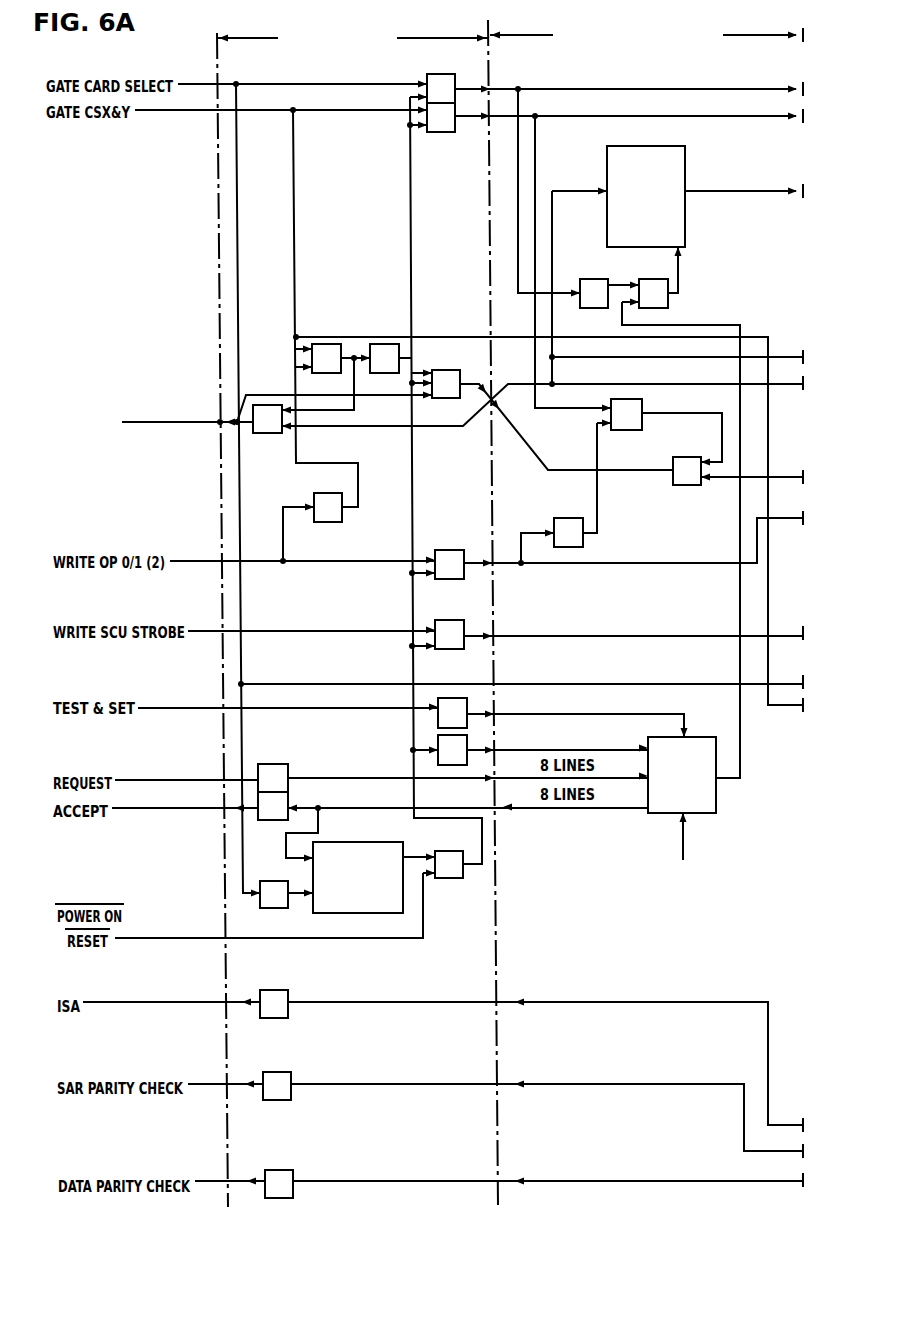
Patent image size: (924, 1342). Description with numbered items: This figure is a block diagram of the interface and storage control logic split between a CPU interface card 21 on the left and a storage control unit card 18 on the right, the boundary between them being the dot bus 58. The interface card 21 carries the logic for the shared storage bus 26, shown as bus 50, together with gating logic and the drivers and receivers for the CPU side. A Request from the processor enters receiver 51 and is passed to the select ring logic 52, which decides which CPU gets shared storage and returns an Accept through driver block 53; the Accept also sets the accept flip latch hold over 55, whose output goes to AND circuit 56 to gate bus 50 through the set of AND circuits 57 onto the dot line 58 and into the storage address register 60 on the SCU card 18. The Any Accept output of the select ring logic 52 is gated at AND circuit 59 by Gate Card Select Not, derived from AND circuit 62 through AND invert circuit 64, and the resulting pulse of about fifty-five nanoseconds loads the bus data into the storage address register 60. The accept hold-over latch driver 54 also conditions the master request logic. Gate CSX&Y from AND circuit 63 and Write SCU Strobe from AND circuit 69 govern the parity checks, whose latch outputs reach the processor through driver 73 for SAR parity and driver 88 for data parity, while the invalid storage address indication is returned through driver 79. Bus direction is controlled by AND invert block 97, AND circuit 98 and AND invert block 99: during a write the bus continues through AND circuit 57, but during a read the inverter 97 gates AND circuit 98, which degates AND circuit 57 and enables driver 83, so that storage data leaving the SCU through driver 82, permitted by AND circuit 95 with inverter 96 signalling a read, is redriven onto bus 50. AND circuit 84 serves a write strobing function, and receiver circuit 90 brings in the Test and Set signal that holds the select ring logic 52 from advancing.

The storage control unit card 18 is at (646, 36).
The CPU interface card 21 is at (352, 40).
The 26-bit shared storage bus 26 is at (149, 414).
The bus 50 is at (180, 422).
The receiver 51 is at (278, 764).
The select ring logic 52 is at (703, 737).
The driver block 53 is at (272, 820).
The accept hold-over latch driver 54 is at (452, 765).
The accept flip latch hold over 55 is at (371, 842).
The AND circuit 56 is at (452, 878).
The AND circuits 57 is at (448, 370).
The dot bus 58 is at (475, 612).
The AND circuit 59 is at (668, 300).
The storage address register 60 is at (685, 160).
The AND circuit 62 is at (437, 74).
The AND circuit 63 is at (447, 132).
The AND invert circuit 64 is at (590, 279).
The AND circuit 69 is at (452, 620).
The driver 73 is at (285, 1072).
The driver 79 is at (280, 990).
The driver 82 is at (686, 457).
The driver 83 is at (272, 433).
The AND circuit 84 is at (449, 550).
The driver 88 is at (288, 1170).
The receiver circuit 90 is at (455, 698).
The AND circuit 95 is at (625, 430).
The inverter 96 is at (562, 518).
The AND invert block 97 is at (330, 522).
The AND circuit 98 is at (325, 344).
The AND invert block 99 is at (380, 344).